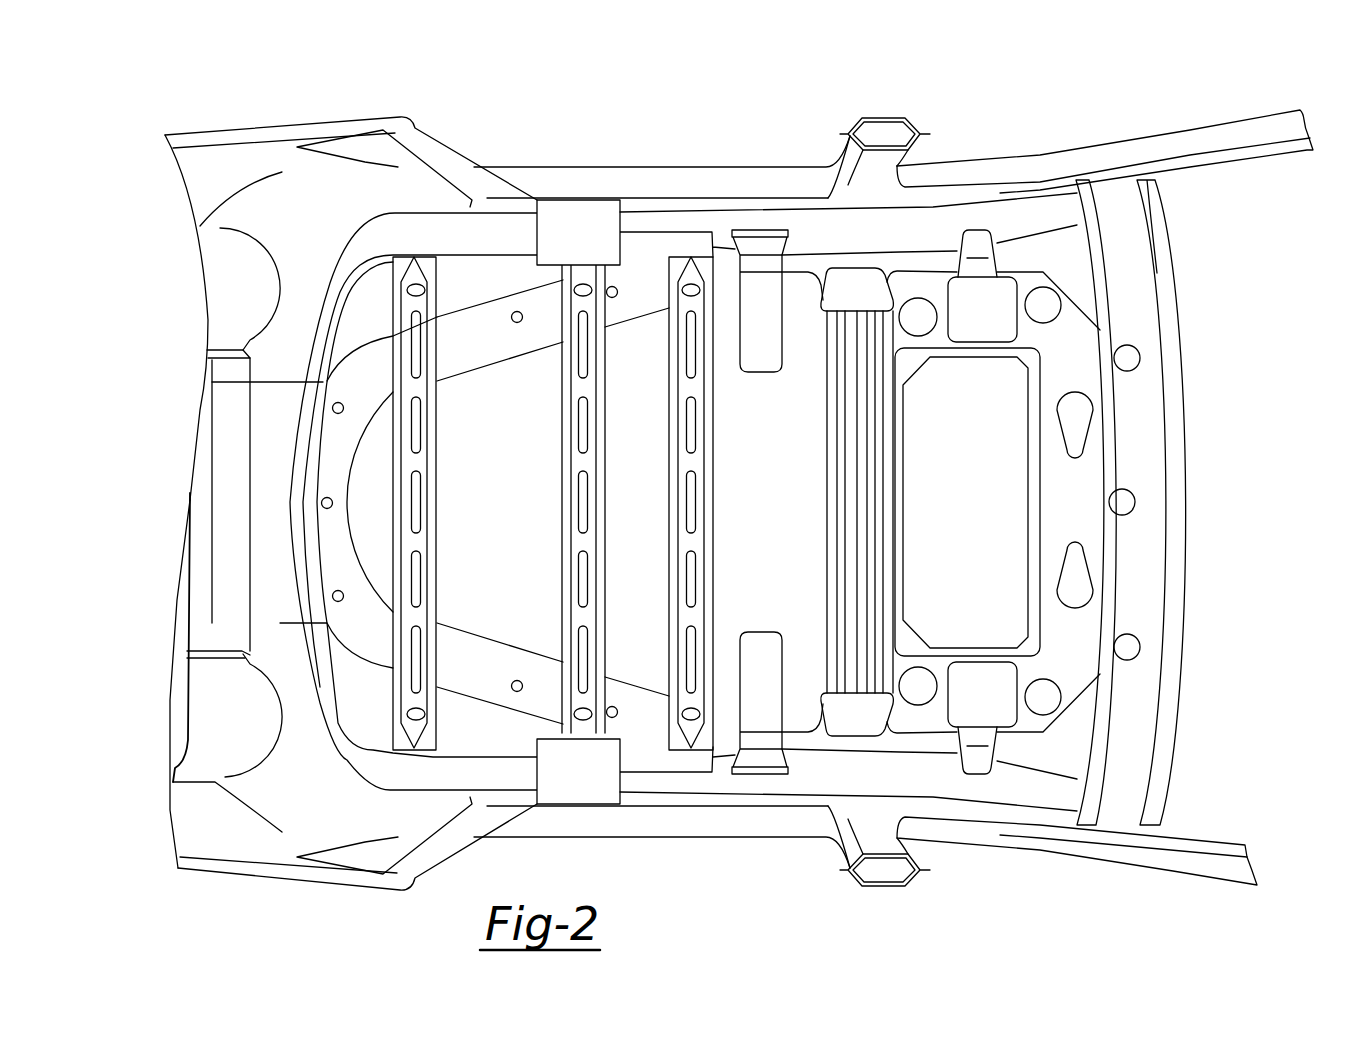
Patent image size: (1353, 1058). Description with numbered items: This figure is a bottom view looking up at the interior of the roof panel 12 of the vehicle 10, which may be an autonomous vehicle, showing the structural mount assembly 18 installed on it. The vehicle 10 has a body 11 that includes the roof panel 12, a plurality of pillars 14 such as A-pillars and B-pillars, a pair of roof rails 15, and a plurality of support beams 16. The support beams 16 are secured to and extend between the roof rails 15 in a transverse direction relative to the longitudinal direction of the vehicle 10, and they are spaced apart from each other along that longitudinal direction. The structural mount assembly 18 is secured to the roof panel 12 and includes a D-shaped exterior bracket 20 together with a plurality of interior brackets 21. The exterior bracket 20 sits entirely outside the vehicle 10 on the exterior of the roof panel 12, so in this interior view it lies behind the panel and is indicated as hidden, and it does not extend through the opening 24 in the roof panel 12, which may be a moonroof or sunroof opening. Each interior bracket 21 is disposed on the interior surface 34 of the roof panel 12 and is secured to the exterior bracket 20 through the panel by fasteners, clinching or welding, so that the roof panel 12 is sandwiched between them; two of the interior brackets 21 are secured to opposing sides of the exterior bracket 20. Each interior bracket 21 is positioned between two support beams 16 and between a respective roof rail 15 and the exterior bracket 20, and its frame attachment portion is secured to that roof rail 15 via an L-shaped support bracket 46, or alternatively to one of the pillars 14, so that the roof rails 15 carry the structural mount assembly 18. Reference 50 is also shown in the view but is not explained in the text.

The vehicle 10 is at (184, 116).
The body 11 is at (248, 875).
The roof panel 12 is at (357, 674).
The interior surface 34 is at (483, 277).
The roof rails 15 is at (556, 167).
The L-shaped support bracket 46 is at (650, 212).
The pillars 14 is at (870, 130).
The interior brackets 21 is at (982, 295).
The support beams 16 is at (867, 425).
The opening 24 is at (1010, 545).
The structural mount assembly 18 is at (1074, 648).
The exterior bracket 20 is at (1063, 443).
The hidden line region 50 is at (342, 524).